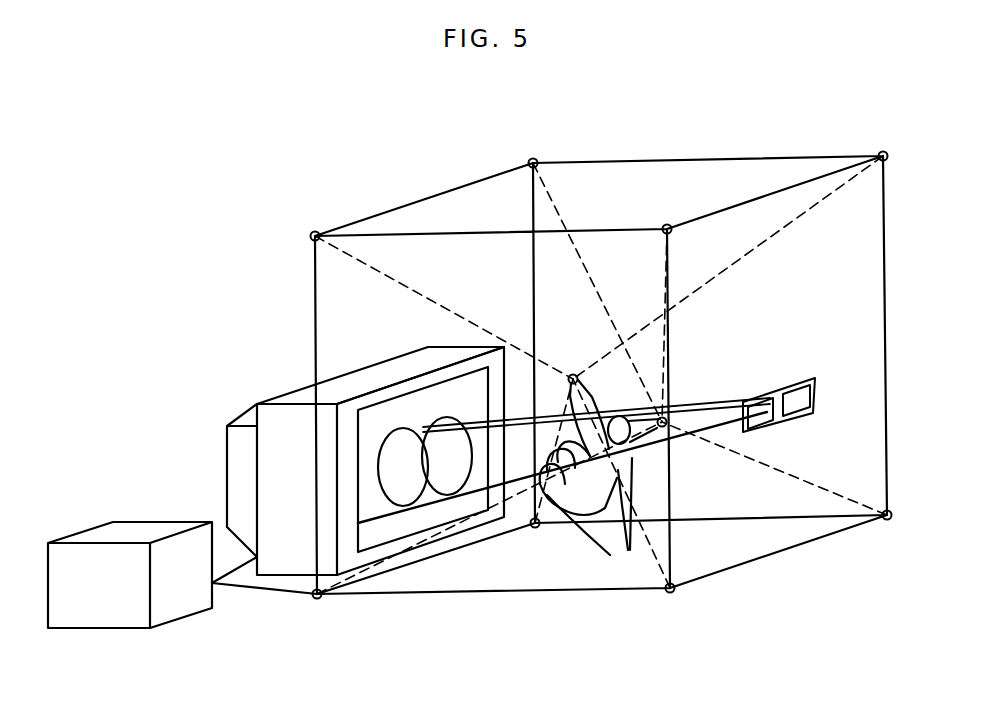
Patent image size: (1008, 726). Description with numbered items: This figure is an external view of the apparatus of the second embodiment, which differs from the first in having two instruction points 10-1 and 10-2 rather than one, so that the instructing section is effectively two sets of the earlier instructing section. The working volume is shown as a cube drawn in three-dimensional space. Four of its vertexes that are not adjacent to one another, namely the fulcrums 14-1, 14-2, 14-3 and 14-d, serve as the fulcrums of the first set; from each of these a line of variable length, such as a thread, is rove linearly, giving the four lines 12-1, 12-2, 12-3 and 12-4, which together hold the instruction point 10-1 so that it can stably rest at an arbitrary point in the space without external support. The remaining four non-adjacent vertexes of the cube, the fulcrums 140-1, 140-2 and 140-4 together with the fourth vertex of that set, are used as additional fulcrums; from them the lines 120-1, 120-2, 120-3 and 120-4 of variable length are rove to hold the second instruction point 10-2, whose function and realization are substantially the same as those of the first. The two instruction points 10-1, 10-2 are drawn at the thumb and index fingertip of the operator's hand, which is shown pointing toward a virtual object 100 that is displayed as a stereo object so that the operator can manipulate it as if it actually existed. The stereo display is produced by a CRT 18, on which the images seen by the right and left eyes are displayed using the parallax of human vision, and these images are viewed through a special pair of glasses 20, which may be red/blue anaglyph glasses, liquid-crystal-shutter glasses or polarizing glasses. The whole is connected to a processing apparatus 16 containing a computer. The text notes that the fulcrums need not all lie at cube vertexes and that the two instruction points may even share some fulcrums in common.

The instruction point 10-1 is at (667, 407).
The instruction point 10-2 is at (580, 380).
The line of variable length 12-1 is at (593, 456).
The line of variable length 12-2 is at (574, 243).
The line of variable length 12-3 is at (660, 340).
The line of variable length 12-4 is at (735, 455).
The fulcrum 14-1 is at (318, 599).
The fulcrum 14-2 is at (534, 159).
The fulcrum 14-3 is at (672, 593).
The fulcrum 14-d is at (886, 520).
The processing apparatus 16 is at (127, 628).
The CRT 18 is at (287, 393).
The special glasses 20 is at (800, 417).
The virtual object 100 is at (622, 470).
The line of variable length 120-1 is at (370, 268).
The line of variable length 120-2 is at (545, 490).
The line of variable length 120-3 is at (640, 519).
The line of variable length 120-4 is at (817, 205).
The fulcrum 140-1 is at (312, 233).
The fulcrum 140-2 is at (539, 527).
The fulcrum 140-4 is at (879, 153).